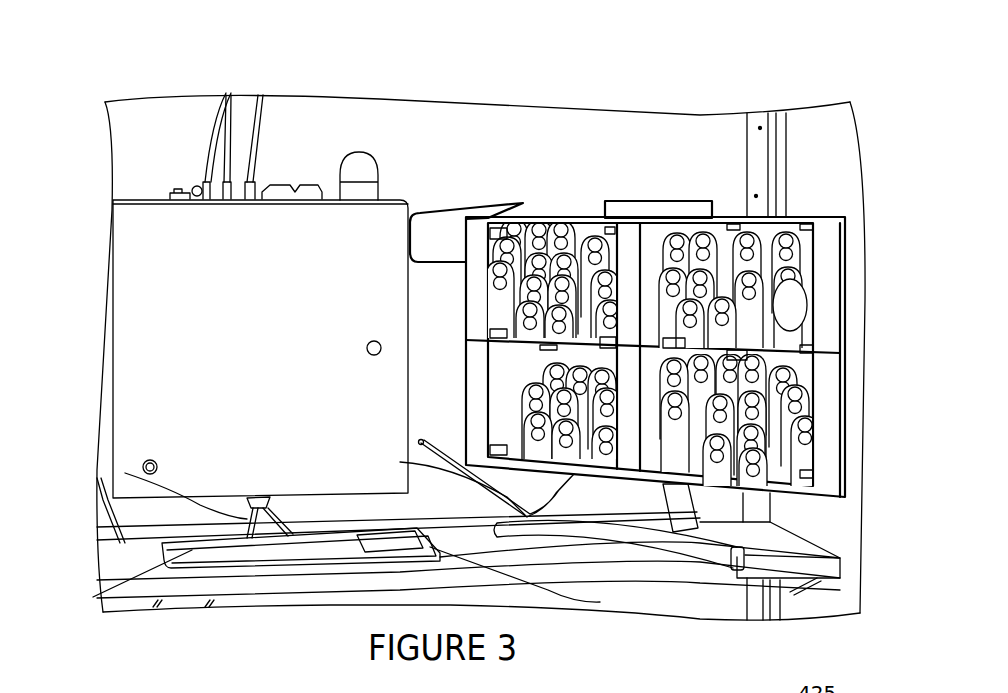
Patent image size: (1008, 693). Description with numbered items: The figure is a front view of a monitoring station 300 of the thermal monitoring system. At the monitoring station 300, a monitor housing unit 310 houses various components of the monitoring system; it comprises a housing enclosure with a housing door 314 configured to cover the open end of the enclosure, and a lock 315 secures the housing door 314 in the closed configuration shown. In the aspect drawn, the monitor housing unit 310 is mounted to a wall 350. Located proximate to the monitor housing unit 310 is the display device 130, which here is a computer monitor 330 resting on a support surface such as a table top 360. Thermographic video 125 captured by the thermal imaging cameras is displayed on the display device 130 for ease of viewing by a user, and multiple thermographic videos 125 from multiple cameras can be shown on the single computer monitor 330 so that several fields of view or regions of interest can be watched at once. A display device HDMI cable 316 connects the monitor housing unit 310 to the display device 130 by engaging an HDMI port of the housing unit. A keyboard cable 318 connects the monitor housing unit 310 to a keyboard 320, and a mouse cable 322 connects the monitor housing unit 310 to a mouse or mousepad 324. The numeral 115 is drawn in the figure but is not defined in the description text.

The monitoring station 300 is at (513, 93).
The monitor housing unit 310 is at (214, 295).
The housing door 314 is at (143, 282).
The lock 315 is at (381, 352).
The display device HDMI cable 316 is at (400, 462).
The keyboard cable 318 is at (125, 473).
The keyboard 320 is at (110, 595).
The mouse cable 322 is at (263, 506).
The mouse or mousepad 324 is at (532, 581).
The computer monitor 330 is at (728, 180).
The wall 350 is at (423, 140).
The table top 360 is at (197, 550).
The display device 130 is at (658, 297).
The thermographic video 125 is at (470, 289).
The lower product compartments 115 is at (753, 413).